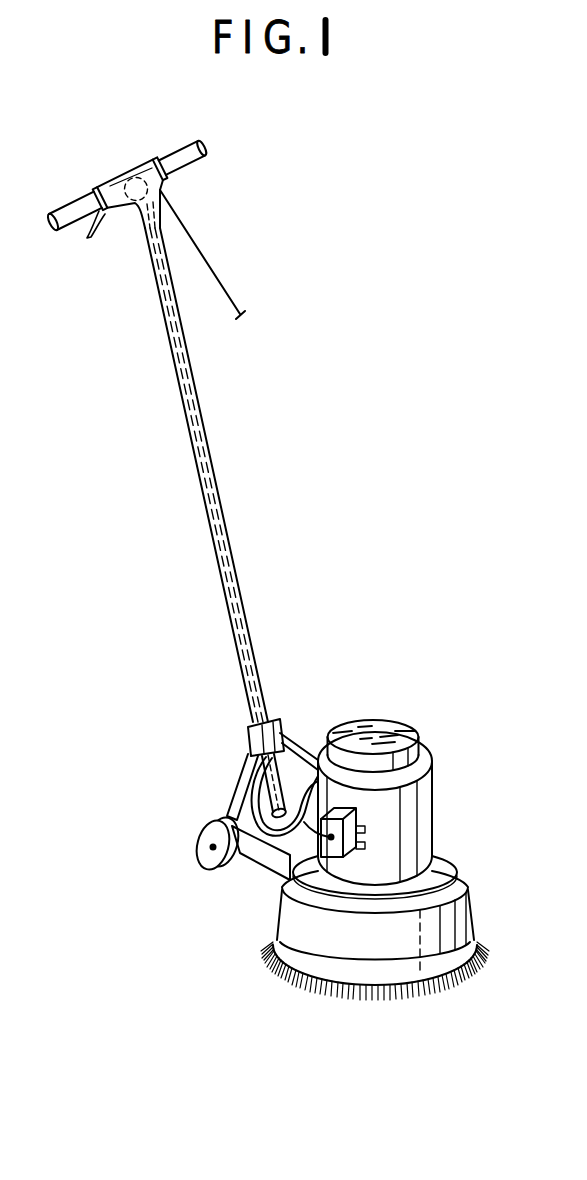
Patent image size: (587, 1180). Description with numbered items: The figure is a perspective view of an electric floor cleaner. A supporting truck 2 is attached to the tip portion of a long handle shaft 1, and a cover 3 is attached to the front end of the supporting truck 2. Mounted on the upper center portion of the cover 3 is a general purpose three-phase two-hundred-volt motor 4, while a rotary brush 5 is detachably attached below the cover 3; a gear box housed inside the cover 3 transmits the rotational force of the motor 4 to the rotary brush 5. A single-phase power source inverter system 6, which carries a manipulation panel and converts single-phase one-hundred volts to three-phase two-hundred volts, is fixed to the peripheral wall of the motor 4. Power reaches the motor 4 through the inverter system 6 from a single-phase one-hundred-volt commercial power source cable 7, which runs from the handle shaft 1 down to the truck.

The handle shaft 1 is at (195, 452).
The supporting truck 2 is at (263, 862).
The cover 3 is at (318, 925).
The three-phase 200 volt motor 4 is at (413, 815).
The rotary brush 5 is at (380, 1000).
The single-phase power source inverter system 6 is at (315, 870).
The single-phase 100 volt commercial power source cable 7 is at (207, 263).